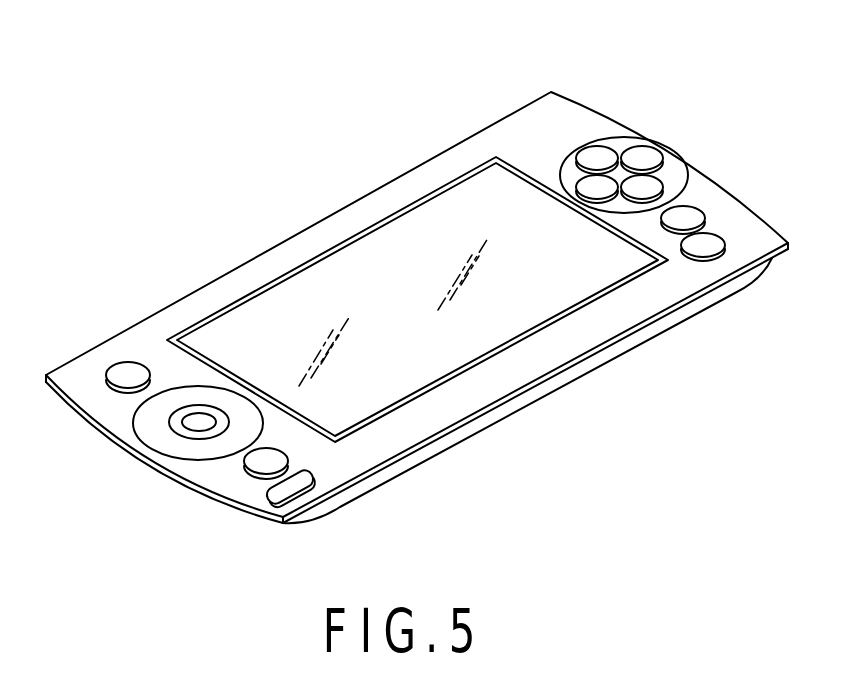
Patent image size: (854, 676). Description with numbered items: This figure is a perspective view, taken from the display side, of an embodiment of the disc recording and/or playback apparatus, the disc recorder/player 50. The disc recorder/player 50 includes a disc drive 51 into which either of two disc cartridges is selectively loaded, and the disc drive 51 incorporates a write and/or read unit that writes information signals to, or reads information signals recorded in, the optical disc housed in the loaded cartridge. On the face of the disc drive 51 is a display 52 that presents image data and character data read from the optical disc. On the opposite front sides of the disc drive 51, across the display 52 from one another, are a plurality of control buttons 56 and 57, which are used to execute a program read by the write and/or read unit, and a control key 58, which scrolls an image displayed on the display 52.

The disc recorder/player 50 is at (413, 290).
The disc drive 51 is at (570, 382).
The display 52 is at (372, 283).
The control button 56 is at (198, 427).
The control button 57 is at (123, 372).
The control key 58 is at (620, 143).